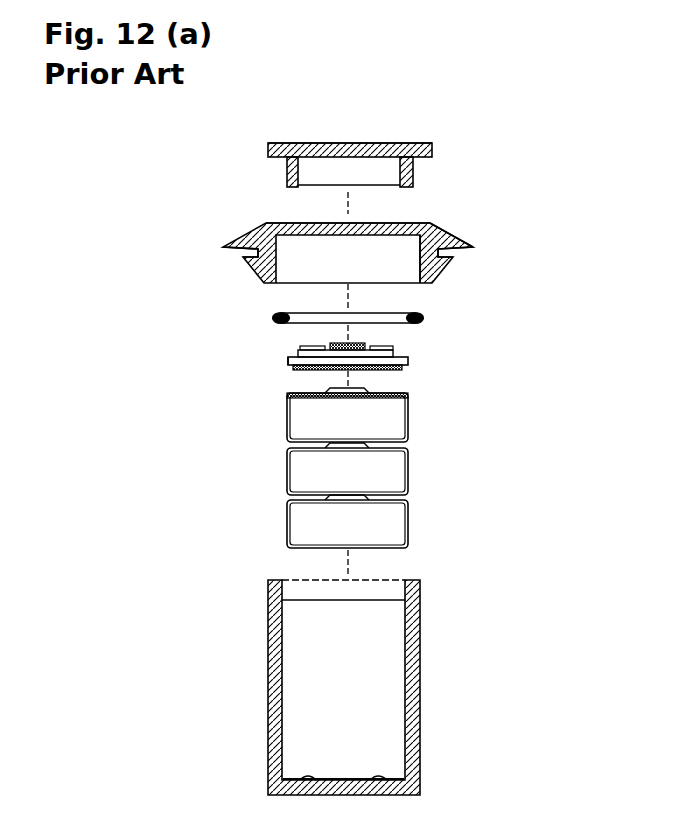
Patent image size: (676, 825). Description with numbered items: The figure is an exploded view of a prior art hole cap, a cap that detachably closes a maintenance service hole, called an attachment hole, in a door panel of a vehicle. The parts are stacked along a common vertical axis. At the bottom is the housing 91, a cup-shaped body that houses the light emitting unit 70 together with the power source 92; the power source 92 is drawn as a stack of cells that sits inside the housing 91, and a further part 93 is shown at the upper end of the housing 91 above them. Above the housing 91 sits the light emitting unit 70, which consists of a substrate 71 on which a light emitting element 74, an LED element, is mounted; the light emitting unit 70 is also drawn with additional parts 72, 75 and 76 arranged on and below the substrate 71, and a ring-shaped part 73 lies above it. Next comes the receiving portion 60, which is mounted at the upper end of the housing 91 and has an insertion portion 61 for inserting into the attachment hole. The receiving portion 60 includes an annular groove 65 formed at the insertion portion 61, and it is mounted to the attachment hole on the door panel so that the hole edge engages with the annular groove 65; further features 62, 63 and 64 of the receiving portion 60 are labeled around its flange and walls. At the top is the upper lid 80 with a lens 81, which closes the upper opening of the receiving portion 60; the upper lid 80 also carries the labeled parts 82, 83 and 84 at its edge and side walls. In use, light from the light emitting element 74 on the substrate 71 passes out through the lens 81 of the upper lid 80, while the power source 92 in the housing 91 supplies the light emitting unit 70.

The upper lid 80 is at (351, 136).
The lens 81 is at (389, 143).
The cap plate edge 82 is at (430, 143).
The cap side wall 83 is at (287, 178).
The cap side wall 84 is at (413, 176).
The receiving portion 60 is at (344, 250).
The insertion portion 61 is at (247, 260).
The gasket top portion 62 is at (245, 226).
The gasket inner wall 63 is at (400, 277).
The gasket flange upper face 64 is at (431, 228).
The annular groove 65 is at (449, 257).
The O-ring 73 is at (335, 343).
The light emitting unit 70 is at (336, 361).
The substrate 71 is at (408, 362).
The upper disc 72 is at (400, 350).
The light emitting element 74 is at (390, 349).
The lower insulating layer 75 is at (403, 370).
The plate edge 76 is at (307, 370).
The power source 92 is at (277, 462).
The housing 91 is at (374, 679).
The insulating plate 93 is at (290, 583).